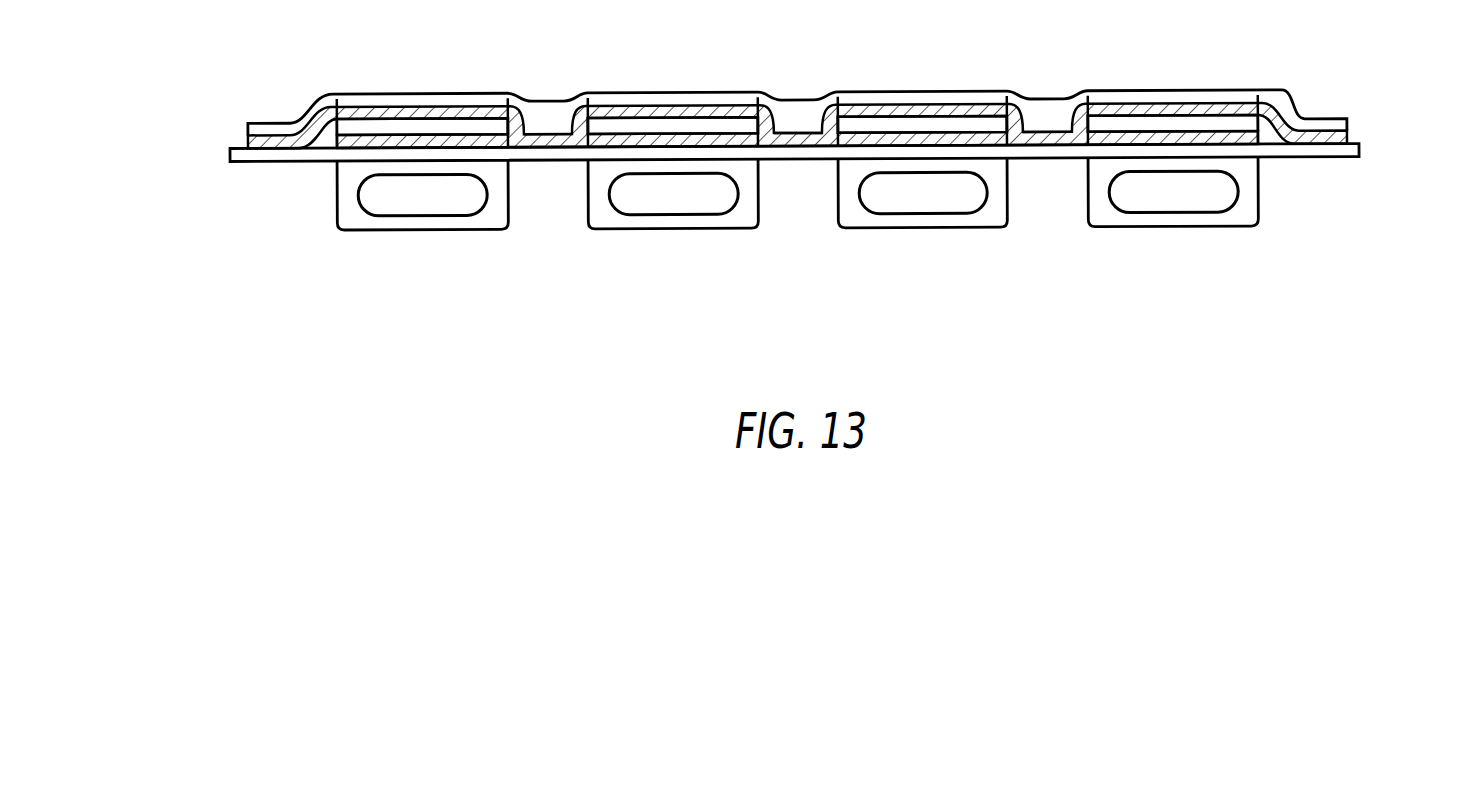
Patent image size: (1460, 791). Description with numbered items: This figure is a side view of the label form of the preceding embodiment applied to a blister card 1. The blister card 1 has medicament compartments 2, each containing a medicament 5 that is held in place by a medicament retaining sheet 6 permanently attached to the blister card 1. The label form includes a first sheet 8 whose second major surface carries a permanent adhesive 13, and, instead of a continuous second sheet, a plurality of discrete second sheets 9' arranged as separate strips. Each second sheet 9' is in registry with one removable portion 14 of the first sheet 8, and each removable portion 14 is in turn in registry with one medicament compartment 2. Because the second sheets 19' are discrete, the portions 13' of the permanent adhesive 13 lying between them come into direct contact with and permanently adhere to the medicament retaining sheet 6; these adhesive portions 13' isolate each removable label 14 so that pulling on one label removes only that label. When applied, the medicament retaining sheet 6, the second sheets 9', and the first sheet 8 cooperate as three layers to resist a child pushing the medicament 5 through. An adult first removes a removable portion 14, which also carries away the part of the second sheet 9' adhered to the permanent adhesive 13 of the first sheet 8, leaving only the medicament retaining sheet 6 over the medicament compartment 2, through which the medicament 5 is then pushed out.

The blister card 1 is at (1313, 192).
The medicament compartment 2 is at (350, 230).
The medicament 5 is at (1168, 204).
The medicament retaining sheet 6 is at (1362, 152).
The first sheet 8 is at (1365, 113).
The permanent adhesive 13 is at (742, 121).
The portions of the permanent adhesive 13' is at (799, 77).
The removable portion 14 is at (418, 93).
The second sheet 9' is at (763, 168).
The second sheet 19' is at (819, 210).